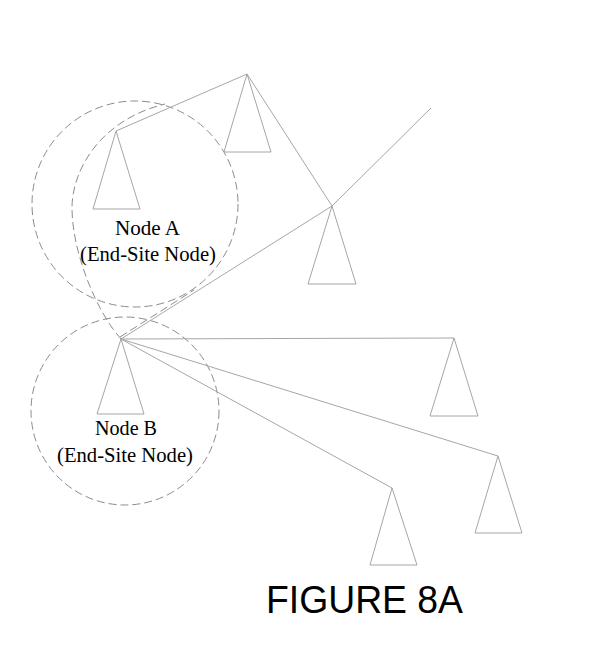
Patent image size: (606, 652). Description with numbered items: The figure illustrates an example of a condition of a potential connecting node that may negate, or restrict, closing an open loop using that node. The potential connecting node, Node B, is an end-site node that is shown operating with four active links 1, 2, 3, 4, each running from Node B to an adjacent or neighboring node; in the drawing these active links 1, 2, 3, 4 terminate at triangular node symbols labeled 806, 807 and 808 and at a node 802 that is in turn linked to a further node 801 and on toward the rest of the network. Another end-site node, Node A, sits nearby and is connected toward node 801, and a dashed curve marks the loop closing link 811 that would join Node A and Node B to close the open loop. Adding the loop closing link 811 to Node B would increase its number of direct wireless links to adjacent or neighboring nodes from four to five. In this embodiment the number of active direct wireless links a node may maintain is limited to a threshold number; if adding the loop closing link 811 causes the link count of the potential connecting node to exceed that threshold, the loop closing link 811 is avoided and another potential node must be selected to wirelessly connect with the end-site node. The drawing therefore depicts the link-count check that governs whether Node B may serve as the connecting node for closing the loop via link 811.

The loop closing link 811 is at (72, 197).
The network node 801 is at (253, 132).
The network node 802 is at (338, 258).
The network node 806 is at (473, 377).
The network node 807 is at (521, 494).
The network node 808 is at (375, 526).
The active link 1 is at (226, 272).
The active link 2 is at (287, 329).
The active link 3 is at (309, 397).
The active link 4 is at (256, 413).